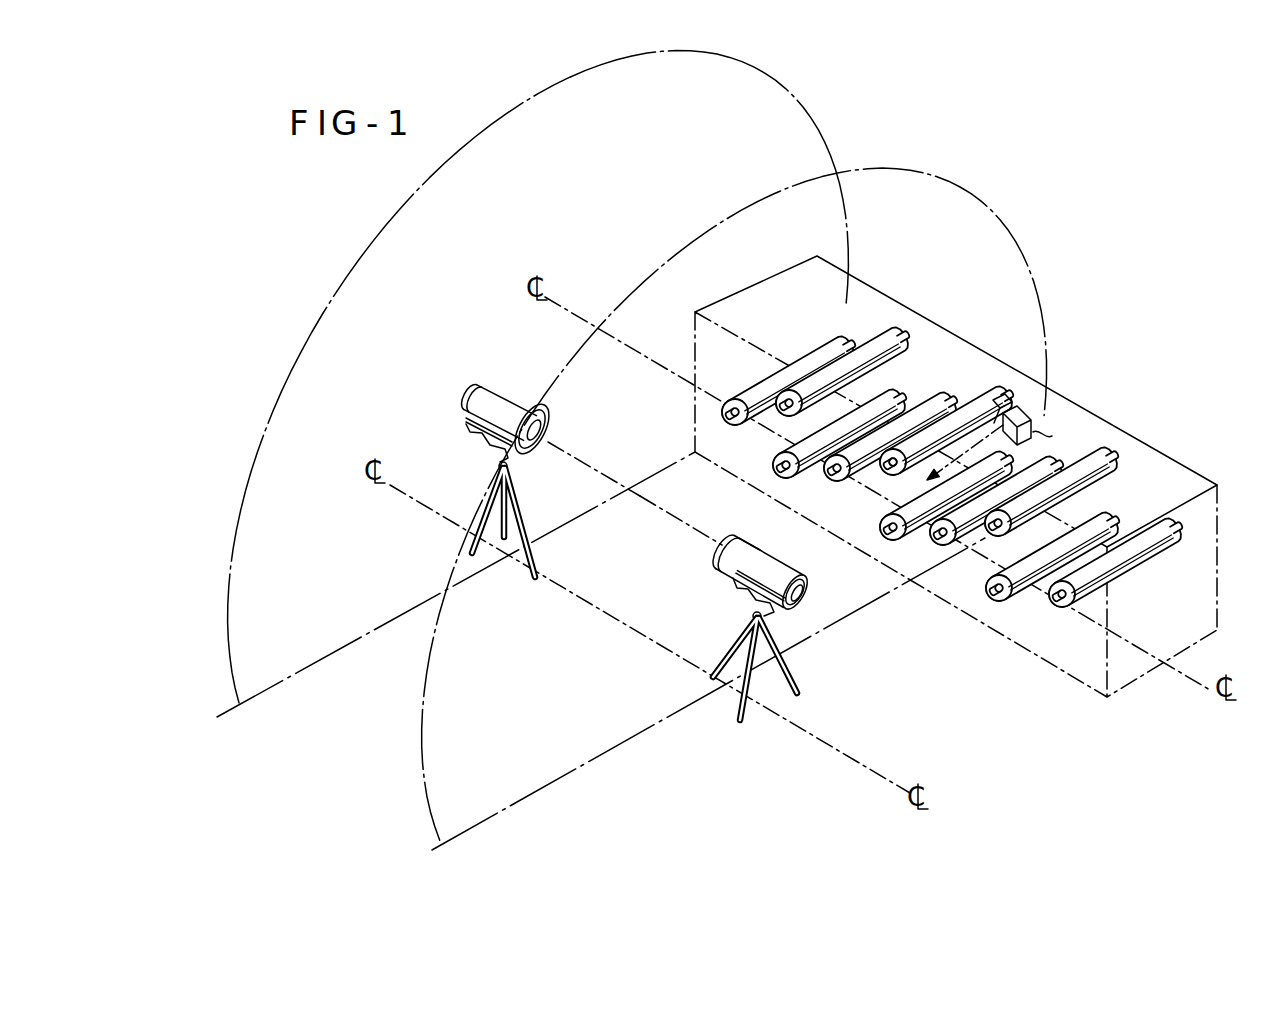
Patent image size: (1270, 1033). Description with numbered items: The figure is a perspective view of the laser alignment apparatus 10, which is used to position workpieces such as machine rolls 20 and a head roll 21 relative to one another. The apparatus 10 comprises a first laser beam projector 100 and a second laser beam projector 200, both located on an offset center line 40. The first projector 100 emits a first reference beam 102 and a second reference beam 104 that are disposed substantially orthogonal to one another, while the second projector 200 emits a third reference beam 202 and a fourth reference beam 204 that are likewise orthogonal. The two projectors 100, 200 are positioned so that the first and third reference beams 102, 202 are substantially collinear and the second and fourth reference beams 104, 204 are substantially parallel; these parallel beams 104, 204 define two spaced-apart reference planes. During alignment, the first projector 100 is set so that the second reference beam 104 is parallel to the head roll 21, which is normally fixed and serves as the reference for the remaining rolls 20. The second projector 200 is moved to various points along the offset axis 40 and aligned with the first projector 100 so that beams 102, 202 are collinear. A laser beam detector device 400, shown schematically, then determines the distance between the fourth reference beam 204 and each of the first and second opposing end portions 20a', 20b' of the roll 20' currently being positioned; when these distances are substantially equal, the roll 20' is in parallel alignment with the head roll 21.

The laser alignment apparatus 10 is at (451, 329).
The machine rolls 20 is at (895, 403).
The roll currently being positioned 20' is at (946, 409).
The first opposing end portion of the roll 20a' is at (1013, 358).
The second opposing end portion of the roll 20b' is at (853, 485).
The head roll 21 is at (808, 362).
The offset center line 40 is at (870, 769).
The first laser beam projector 100 is at (492, 386).
The first reference beam 102 is at (600, 474).
The second reference beam 104 is at (838, 131).
The second laser beam projector 200 is at (807, 588).
The third reference beam 202 is at (690, 530).
The fourth reference beam 204 is at (430, 703).
The laser beam detector device 400 is at (1022, 418).